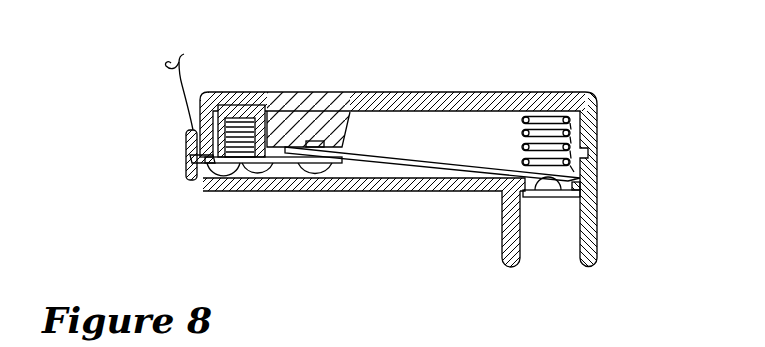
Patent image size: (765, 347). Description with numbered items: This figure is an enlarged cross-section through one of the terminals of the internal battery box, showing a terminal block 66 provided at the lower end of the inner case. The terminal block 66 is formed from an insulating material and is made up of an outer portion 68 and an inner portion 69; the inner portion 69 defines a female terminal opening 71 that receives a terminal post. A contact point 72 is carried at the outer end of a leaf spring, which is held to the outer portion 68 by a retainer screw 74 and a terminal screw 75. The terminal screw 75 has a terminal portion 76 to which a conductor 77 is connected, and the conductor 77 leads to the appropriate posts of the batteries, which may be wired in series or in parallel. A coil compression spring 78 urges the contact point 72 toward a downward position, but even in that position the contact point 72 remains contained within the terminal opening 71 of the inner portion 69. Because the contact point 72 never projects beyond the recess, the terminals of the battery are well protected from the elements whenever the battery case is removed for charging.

The terminal block 66 is at (524, 90).
The outer portion 68 is at (597, 258).
The inner portion 69 is at (386, 193).
The female terminal opening 71 is at (580, 231).
The contact point 72 is at (563, 203).
The retainer screw 74 is at (316, 167).
The terminal screw 75 is at (220, 176).
The terminal portion 76 is at (184, 165).
The conductor 77 is at (180, 86).
The coil compression spring 78 is at (598, 134).